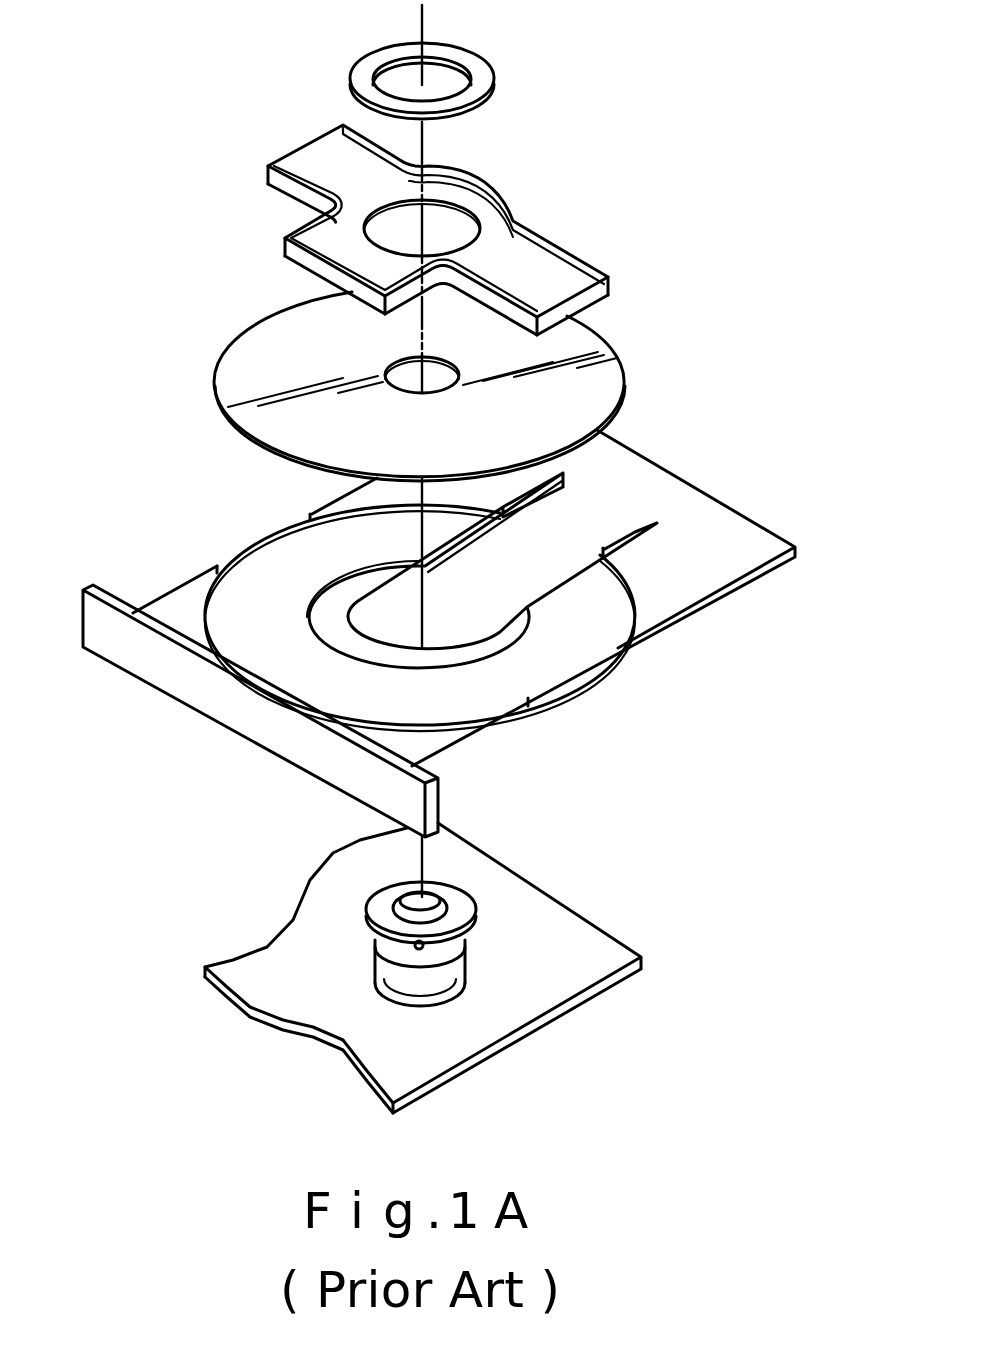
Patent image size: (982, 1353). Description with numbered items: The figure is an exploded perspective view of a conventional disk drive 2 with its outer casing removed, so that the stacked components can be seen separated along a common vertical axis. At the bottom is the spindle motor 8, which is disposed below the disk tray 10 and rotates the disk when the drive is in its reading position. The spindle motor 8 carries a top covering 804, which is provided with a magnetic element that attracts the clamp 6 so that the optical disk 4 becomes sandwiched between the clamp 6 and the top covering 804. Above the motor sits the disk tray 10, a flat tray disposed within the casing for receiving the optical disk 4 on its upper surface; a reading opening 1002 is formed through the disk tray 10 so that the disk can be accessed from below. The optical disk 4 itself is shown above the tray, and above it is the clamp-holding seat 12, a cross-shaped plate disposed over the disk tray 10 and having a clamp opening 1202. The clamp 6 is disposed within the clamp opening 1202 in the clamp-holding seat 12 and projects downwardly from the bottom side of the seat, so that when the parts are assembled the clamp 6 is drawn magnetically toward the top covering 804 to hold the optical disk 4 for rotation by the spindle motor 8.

The conventional disk drive 2 is at (696, 61).
The optical disk 4 is at (608, 392).
The clamp 6 is at (483, 78).
The spindle motor 8 is at (479, 962).
The top covering 804 is at (465, 905).
The disk tray 10 is at (440, 633).
The reading opening 1002 is at (452, 606).
The clamp-holding seat 12 is at (470, 230).
The clamp opening 1202 is at (457, 233).